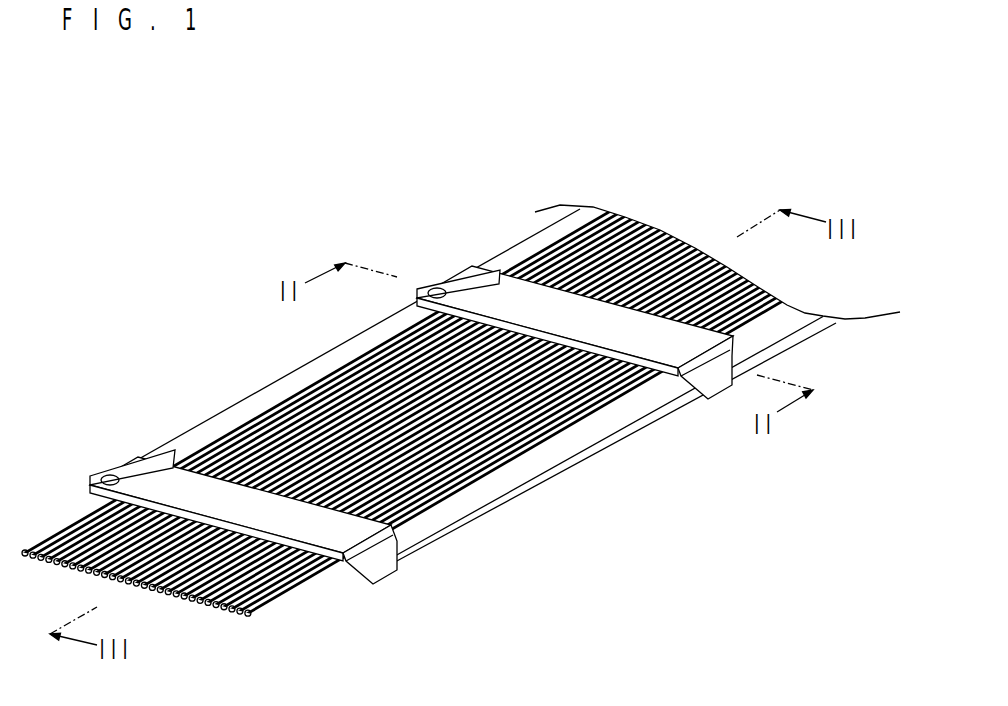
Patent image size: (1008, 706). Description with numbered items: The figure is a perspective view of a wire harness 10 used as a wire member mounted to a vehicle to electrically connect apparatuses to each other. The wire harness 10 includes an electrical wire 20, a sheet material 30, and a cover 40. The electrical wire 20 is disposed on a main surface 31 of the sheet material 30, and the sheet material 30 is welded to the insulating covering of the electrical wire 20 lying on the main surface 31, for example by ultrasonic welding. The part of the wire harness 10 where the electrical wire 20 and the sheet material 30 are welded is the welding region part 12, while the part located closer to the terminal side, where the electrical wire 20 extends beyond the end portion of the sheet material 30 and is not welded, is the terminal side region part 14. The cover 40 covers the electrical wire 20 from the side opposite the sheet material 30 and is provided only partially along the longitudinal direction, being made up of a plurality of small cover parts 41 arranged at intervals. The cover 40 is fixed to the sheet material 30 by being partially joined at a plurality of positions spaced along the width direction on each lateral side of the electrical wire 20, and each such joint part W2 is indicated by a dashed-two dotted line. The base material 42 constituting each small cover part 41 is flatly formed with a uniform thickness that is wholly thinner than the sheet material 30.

The wire harness 10 is at (163, 149).
The welding region part 12 is at (573, 440).
The terminal side region part 14 is at (293, 597).
The electrical wire 20 is at (222, 601).
The sheet material 30 is at (500, 394).
The main surface 31 is at (478, 503).
The cover 40 is at (411, 398).
The small cover part 41 is at (417, 304).
The base material 42 is at (498, 283).
The joint part W2 is at (420, 305).